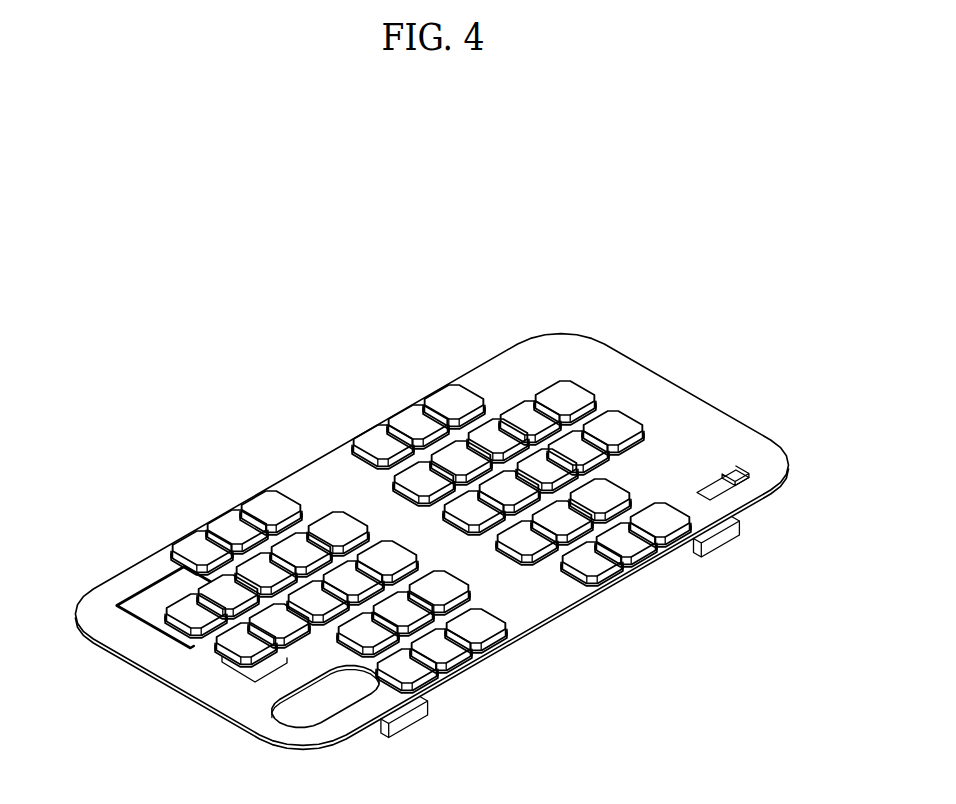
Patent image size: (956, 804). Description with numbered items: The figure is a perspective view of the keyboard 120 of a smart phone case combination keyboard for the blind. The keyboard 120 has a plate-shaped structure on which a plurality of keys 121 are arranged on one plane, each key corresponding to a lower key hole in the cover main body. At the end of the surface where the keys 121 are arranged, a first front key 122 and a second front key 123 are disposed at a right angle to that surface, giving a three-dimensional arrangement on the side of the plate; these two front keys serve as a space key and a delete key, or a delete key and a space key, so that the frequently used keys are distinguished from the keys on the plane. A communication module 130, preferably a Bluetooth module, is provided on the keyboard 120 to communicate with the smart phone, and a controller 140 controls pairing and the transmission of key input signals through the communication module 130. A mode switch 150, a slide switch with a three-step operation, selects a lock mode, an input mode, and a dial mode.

The keyboard 120 is at (306, 445).
The keys 121 is at (199, 539).
The first front key 122 is at (405, 718).
The second front key 123 is at (720, 538).
The communication module 130 is at (237, 673).
The controller 140 is at (141, 599).
The mode switch 150 is at (730, 467).